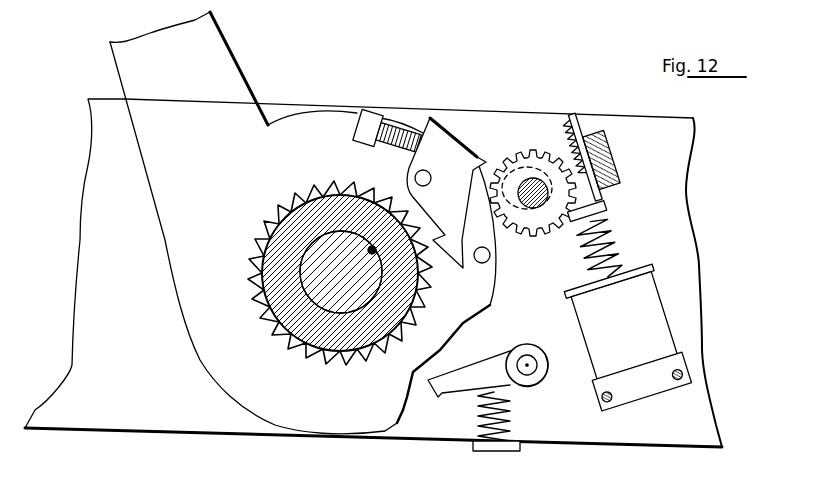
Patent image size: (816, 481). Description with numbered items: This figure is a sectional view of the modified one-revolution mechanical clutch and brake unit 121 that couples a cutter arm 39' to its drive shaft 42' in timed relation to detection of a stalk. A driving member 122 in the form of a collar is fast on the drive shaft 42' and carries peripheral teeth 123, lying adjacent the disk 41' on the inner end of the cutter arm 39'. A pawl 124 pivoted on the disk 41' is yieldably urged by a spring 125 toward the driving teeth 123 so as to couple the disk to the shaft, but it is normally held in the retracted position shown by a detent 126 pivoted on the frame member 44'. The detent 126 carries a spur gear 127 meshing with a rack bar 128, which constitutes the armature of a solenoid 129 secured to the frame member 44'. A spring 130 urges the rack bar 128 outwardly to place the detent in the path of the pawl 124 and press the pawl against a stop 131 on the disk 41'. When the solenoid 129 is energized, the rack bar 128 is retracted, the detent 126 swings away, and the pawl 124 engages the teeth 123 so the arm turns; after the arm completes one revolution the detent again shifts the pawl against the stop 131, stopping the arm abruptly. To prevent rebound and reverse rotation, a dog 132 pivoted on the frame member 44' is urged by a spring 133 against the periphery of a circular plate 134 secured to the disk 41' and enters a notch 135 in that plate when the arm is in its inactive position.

The cutter arm 39' is at (303, 223).
The disk 41' is at (346, 109).
The drive shaft 42' is at (341, 262).
The frame member 44' is at (373, 269).
The one-revolution mechanical clutch and brake unit 121 is at (530, 103).
The driving member 122 is at (302, 342).
The peripheral teeth 123 is at (342, 357).
The pawl 124 is at (443, 258).
The spring 125 is at (397, 127).
The detent 126 is at (492, 169).
The spur gear 127 is at (520, 232).
The rack bar 128 is at (571, 141).
The solenoid 129 is at (587, 322).
The spring 130 is at (617, 243).
The stop 131 is at (491, 259).
The dog 132 is at (512, 387).
The spring 133 is at (510, 413).
The circular plate 134 is at (485, 322).
The notch 135 is at (443, 397).